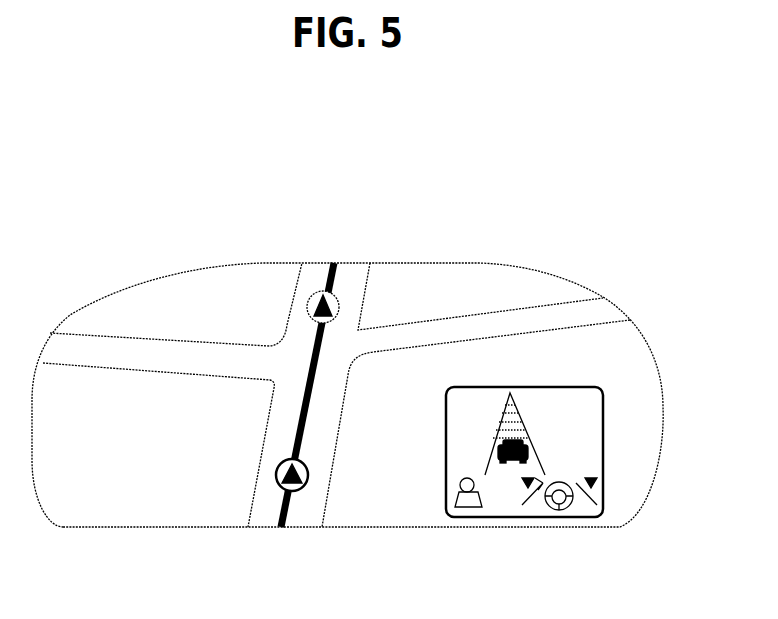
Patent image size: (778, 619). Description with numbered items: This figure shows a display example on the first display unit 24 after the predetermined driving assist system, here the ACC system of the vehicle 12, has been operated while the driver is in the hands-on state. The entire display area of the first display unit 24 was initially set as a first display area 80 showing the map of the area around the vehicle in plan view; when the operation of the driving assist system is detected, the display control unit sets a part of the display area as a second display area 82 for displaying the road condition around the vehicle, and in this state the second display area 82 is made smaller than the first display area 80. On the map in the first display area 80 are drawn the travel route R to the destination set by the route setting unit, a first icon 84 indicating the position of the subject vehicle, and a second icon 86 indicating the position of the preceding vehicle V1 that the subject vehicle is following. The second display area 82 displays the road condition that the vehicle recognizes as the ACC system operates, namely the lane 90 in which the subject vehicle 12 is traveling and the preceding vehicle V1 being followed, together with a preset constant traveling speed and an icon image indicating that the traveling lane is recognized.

The first display unit 24 is at (483, 265).
The first display area 80 is at (562, 353).
The travel route R is at (310, 347).
The second icon 86 is at (338, 298).
The first icon 84 is at (308, 478).
The second display area 82 is at (509, 469).
The preceding vehicle V1 is at (509, 469).
The lane 90 is at (487, 448).
The vehicle 12 is at (518, 464).